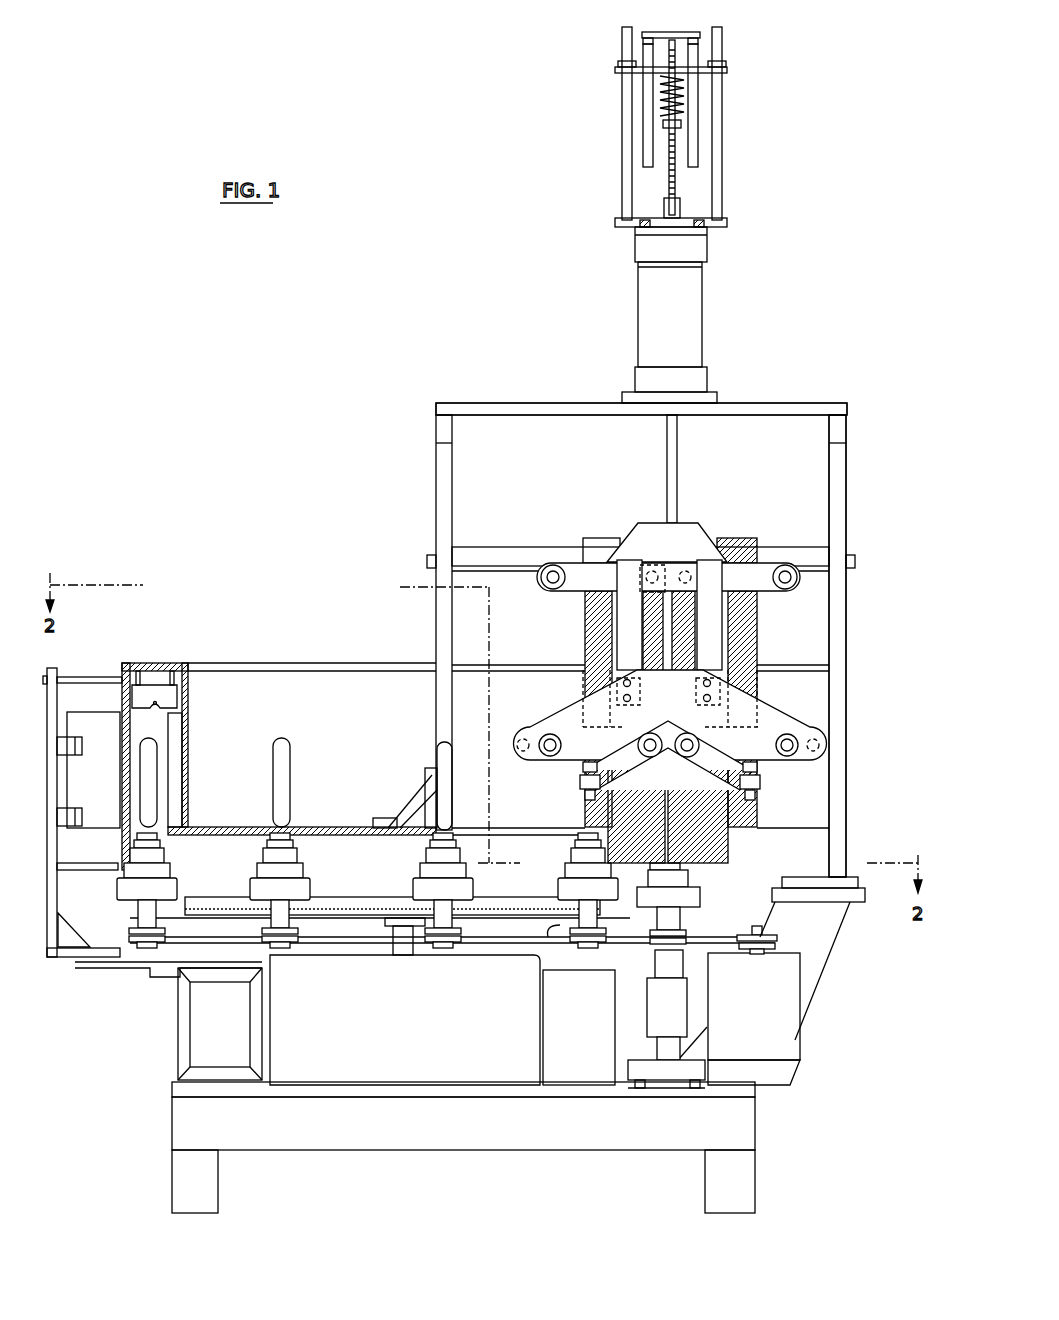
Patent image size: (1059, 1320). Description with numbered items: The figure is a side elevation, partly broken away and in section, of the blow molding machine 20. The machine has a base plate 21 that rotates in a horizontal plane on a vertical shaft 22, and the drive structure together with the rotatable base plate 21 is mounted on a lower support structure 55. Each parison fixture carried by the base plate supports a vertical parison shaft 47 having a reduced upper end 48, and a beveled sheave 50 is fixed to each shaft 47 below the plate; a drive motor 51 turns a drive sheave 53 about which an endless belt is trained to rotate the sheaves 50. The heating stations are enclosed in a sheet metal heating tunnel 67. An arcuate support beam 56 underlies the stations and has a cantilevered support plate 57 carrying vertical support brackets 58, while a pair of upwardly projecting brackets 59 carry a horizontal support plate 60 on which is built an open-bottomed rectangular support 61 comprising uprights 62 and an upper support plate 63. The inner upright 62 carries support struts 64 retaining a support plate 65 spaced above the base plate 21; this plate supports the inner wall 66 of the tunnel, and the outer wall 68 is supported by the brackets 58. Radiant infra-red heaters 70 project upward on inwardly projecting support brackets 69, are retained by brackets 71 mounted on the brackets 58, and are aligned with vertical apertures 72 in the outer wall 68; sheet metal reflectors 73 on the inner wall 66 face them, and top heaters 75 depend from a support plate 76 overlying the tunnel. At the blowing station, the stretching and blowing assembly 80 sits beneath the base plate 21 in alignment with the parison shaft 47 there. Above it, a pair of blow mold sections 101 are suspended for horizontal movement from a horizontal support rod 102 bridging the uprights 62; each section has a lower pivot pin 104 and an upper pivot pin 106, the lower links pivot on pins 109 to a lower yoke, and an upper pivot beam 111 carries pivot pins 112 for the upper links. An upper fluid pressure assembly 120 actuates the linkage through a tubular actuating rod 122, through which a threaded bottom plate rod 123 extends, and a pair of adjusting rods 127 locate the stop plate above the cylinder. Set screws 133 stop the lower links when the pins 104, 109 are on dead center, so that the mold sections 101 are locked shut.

The blow molding machine 20 is at (430, 380).
The base plate 21 is at (352, 897).
The vertical shaft 22 is at (403, 950).
The parison shaft 47 is at (556, 943).
The reduced upper end 48 is at (573, 856).
The beveled sheave 50 is at (588, 950).
The drive motor 51 is at (768, 1023).
The drive sheave 53 is at (757, 952).
The lower support structure 55 is at (485, 1133).
The arcuate support beam 56 is at (178, 1048).
The support plate 57 is at (130, 968).
The vertical support brackets 58 is at (50, 957).
The upwardly projecting brackets 59 is at (828, 945).
The horizontal support plate 60 is at (855, 900).
The open-bottomed rectangular support 61 is at (822, 400).
The uprights 62 is at (436, 472).
The upper support plate 63 is at (540, 403).
The support struts 64 is at (430, 779).
The support plate 65 is at (350, 827).
The inner wall 66 is at (188, 697).
The heating tunnel 67 is at (188, 665).
The outer wall 68 is at (122, 690).
The support brackets 69 is at (82, 677).
The radiant infra-red heaters 70 is at (114, 768).
The brackets 71 is at (76, 748).
The vertical apertures 72 is at (122, 718).
The sheet metal reflectors 73 is at (157, 756).
The top heaters 75 is at (160, 692).
The support plate 76 is at (138, 672).
The stretching and blowing assembly 80 is at (642, 1015).
The blow mold sections 101 is at (600, 545).
The horizontal support rod 102 is at (503, 550).
The lower pivot pin 104 is at (652, 758).
The upper pivot pin 106 is at (685, 570).
The pins 109 is at (550, 757).
The upper pivot beam 111 is at (700, 540).
The pivot pins 112 is at (553, 588).
The upper fluid pressure assembly 120 is at (722, 302).
The actuating rod 122 is at (677, 445).
The threaded bottom plate rod 123 is at (690, 180).
The adjusting rods 127 is at (722, 145).
The set screws 133 is at (583, 800).